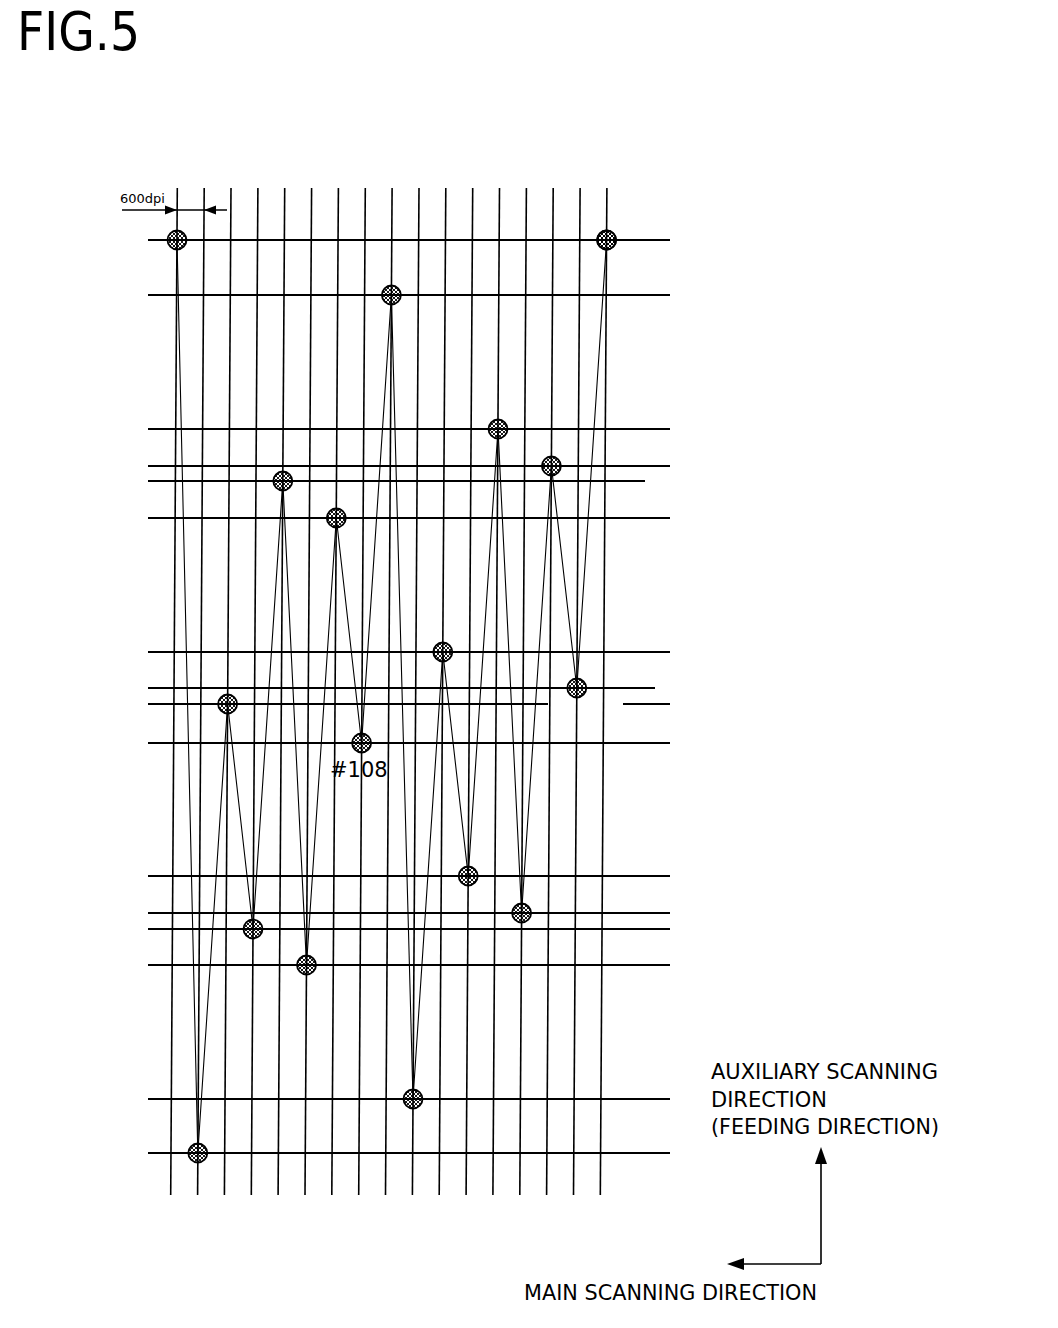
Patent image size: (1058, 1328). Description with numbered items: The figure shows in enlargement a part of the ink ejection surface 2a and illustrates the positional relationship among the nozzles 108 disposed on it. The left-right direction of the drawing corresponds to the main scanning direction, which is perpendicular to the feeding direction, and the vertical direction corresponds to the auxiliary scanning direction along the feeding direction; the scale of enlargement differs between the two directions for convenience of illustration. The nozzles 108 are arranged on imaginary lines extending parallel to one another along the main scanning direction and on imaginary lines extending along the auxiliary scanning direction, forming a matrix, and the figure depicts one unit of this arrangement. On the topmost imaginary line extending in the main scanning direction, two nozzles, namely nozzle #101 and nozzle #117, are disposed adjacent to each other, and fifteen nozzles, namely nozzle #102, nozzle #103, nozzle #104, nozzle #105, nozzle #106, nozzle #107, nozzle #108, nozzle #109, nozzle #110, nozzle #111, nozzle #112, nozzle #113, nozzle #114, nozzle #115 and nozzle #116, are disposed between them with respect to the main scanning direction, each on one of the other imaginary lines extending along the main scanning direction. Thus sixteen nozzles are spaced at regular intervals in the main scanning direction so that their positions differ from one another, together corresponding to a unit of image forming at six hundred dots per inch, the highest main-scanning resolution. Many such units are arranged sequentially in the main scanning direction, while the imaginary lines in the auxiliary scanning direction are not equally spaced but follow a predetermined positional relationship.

The ink ejection surface 2a is at (507, 233).
The nozzle 108 is at (617, 238).
The nozzle # 101 is at (209, 252).
The nozzle # 102 is at (205, 1165).
The nozzle # 103 is at (239, 693).
The nozzle # 104 is at (259, 942).
The nozzle # 105 is at (297, 469).
The nozzle # 106 is at (305, 980).
The nozzle # 107 is at (351, 506).
The nozzle # 109 is at (422, 282).
The nozzle # 110 is at (419, 1114).
The nozzle # 111 is at (444, 639).
The nozzle # 112 is at (477, 890).
The nozzle # 113 is at (499, 417).
The nozzle # 114 is at (531, 928).
The nozzle # 115 is at (556, 454).
The nozzle # 116 is at (585, 703).
The nozzle # 117 is at (639, 252).